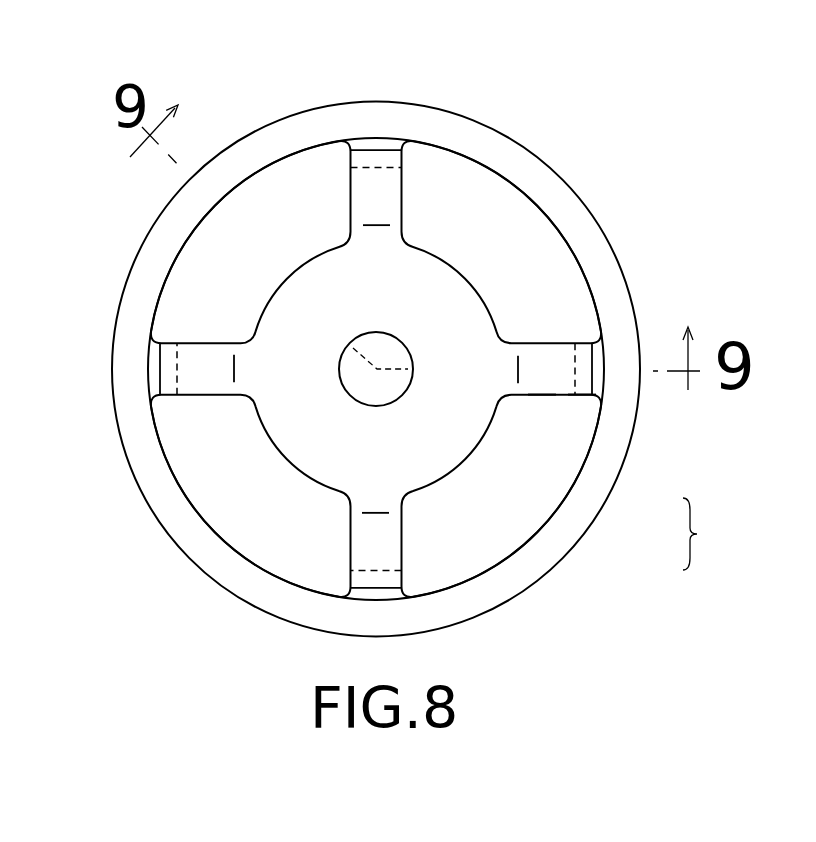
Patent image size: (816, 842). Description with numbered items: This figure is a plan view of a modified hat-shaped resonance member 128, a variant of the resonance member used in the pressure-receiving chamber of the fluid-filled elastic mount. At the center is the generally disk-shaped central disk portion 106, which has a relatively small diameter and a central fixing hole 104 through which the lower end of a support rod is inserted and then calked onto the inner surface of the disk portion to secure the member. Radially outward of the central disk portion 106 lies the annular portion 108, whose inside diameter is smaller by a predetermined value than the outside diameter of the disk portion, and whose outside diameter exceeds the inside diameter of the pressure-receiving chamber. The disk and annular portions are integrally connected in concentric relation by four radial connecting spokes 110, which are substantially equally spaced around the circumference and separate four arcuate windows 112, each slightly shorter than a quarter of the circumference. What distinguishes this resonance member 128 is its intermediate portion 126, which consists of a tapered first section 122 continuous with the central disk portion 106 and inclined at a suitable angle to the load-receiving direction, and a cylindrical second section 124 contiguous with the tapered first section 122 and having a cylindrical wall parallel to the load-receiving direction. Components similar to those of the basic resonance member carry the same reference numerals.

The central fixing hole 104 is at (397, 348).
The central disk portion 106 is at (330, 369).
The annular portion 108 is at (170, 562).
The radial connecting spokes 110 is at (392, 189).
The arcuate windows 112 is at (258, 170).
The tapered first section 122 is at (541, 420).
The cylindrical second section 124 is at (582, 418).
The intermediate portion 126 is at (719, 534).
The resonance member 128 is at (287, 65).